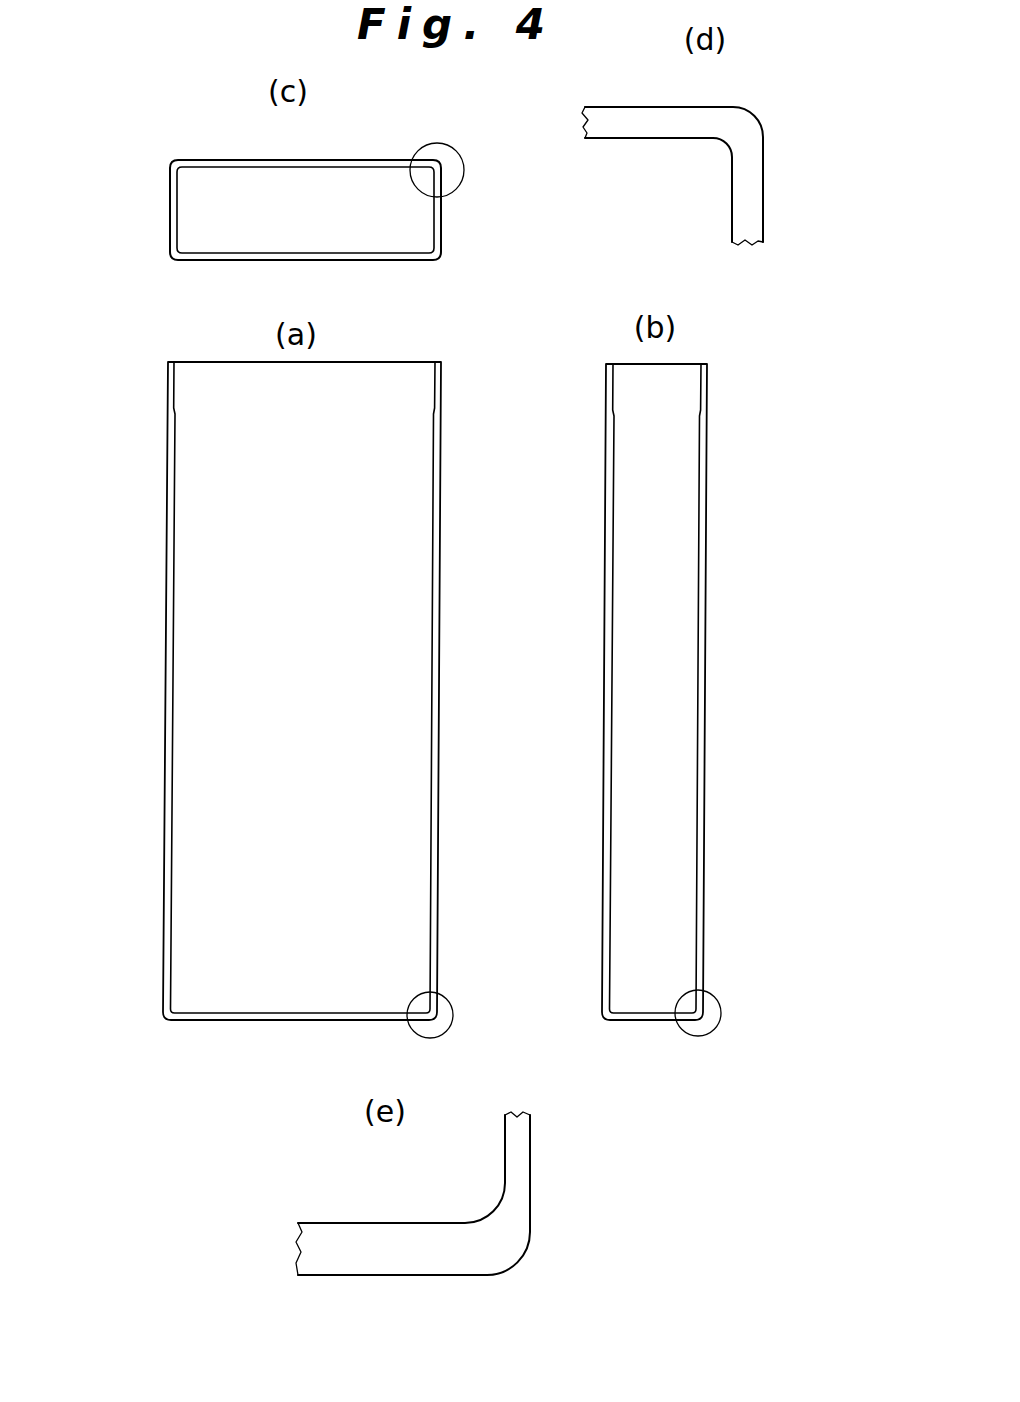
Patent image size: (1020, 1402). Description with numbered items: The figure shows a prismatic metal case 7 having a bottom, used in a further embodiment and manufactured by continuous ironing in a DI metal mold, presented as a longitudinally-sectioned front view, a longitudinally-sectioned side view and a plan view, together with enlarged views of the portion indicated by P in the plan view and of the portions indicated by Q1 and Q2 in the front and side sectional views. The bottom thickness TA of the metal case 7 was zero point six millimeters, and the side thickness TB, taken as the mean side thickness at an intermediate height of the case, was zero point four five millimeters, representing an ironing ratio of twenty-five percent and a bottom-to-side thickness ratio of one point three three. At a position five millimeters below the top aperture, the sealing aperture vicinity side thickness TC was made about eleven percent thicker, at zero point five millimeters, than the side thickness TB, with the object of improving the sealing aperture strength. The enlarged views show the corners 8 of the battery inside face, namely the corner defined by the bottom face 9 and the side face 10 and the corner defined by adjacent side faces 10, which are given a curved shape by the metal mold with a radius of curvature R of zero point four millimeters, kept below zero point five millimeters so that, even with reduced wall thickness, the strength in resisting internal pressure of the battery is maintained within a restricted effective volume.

The metal case 7 is at (313, 160).
The corners 8 is at (437, 176).
The bottom face 9 is at (208, 1013).
The side face 10 is at (437, 221).
The portion indicated by P is at (432, 143).
The portion indicated by Q1 is at (454, 1033).
The portion indicated by Q2 is at (723, 1014).
The radius of curvature R is at (716, 155).
The bottom thickness TA is at (306, 982).
The side thickness TB is at (130, 680).
The sealing aperture vicinity side thickness TC is at (140, 383).